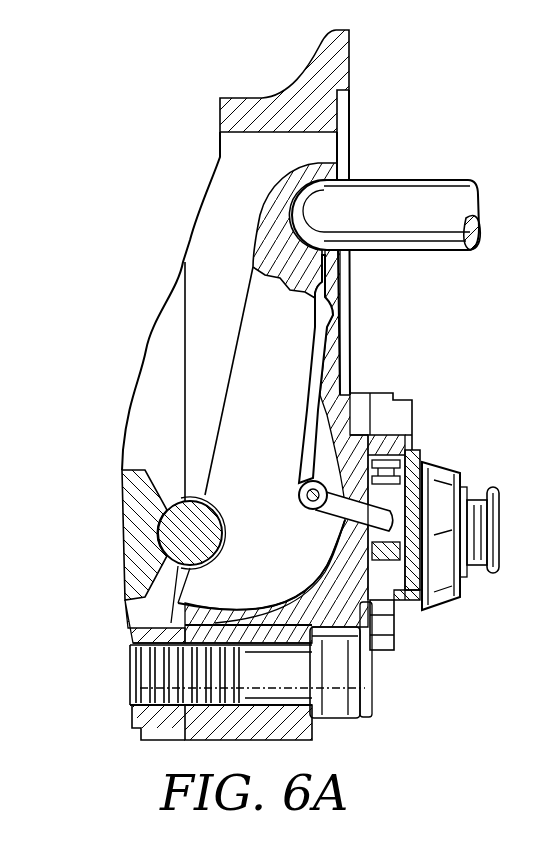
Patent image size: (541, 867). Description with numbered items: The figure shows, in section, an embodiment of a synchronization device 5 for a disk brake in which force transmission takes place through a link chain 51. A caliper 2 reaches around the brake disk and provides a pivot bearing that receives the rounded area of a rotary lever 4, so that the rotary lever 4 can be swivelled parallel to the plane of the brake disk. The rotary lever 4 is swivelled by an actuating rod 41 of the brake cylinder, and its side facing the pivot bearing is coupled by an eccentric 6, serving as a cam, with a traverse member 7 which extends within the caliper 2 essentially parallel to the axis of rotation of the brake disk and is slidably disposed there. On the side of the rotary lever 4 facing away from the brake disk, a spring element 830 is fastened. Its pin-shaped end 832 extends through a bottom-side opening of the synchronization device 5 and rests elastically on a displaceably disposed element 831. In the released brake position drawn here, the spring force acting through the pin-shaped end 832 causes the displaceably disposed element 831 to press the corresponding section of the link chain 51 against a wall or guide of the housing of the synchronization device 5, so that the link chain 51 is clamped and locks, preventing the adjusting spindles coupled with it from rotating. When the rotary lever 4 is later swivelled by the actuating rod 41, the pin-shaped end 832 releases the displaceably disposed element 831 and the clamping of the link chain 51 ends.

The caliper 2 is at (352, 55).
The actuating rod 41 is at (403, 198).
The rotary lever 4 is at (262, 323).
The spring element 830 is at (315, 376).
The eccentric 6 is at (172, 505).
The traverse member 7 is at (138, 520).
The link chain 51 is at (412, 455).
The displaceably disposed element 831 is at (425, 480).
The synchronization device 5 is at (450, 598).
The pin-shaped end 832 is at (403, 630).